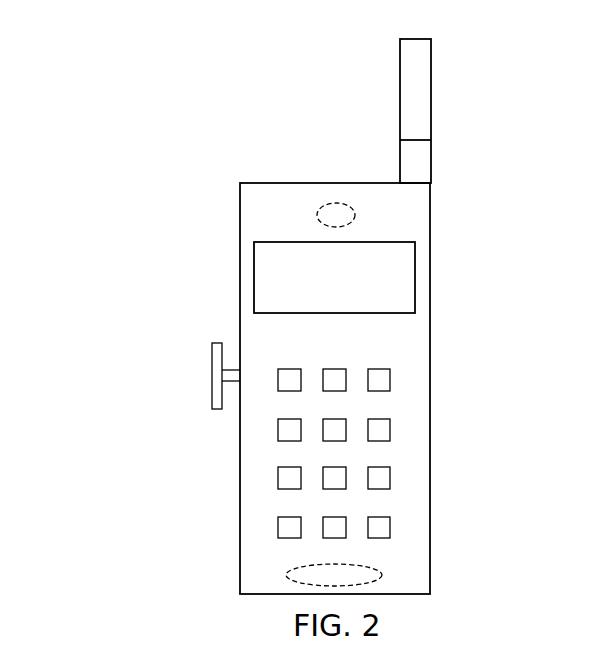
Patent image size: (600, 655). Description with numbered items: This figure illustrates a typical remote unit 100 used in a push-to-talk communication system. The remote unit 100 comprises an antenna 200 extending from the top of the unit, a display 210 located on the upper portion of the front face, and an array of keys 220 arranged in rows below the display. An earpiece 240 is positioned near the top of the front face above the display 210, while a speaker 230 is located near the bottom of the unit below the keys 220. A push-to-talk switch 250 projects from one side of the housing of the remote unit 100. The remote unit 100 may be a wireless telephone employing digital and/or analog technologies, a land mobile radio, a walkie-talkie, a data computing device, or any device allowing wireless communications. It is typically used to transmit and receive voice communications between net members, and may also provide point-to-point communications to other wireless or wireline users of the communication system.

The remote unit 100 is at (231, 324).
The antenna 200 is at (421, 39).
The display 210 is at (313, 313).
The keys 220 is at (405, 415).
The speaker 230 is at (368, 566).
The earpiece 240 is at (355, 216).
The push-to-talk switch 250 is at (212, 364).